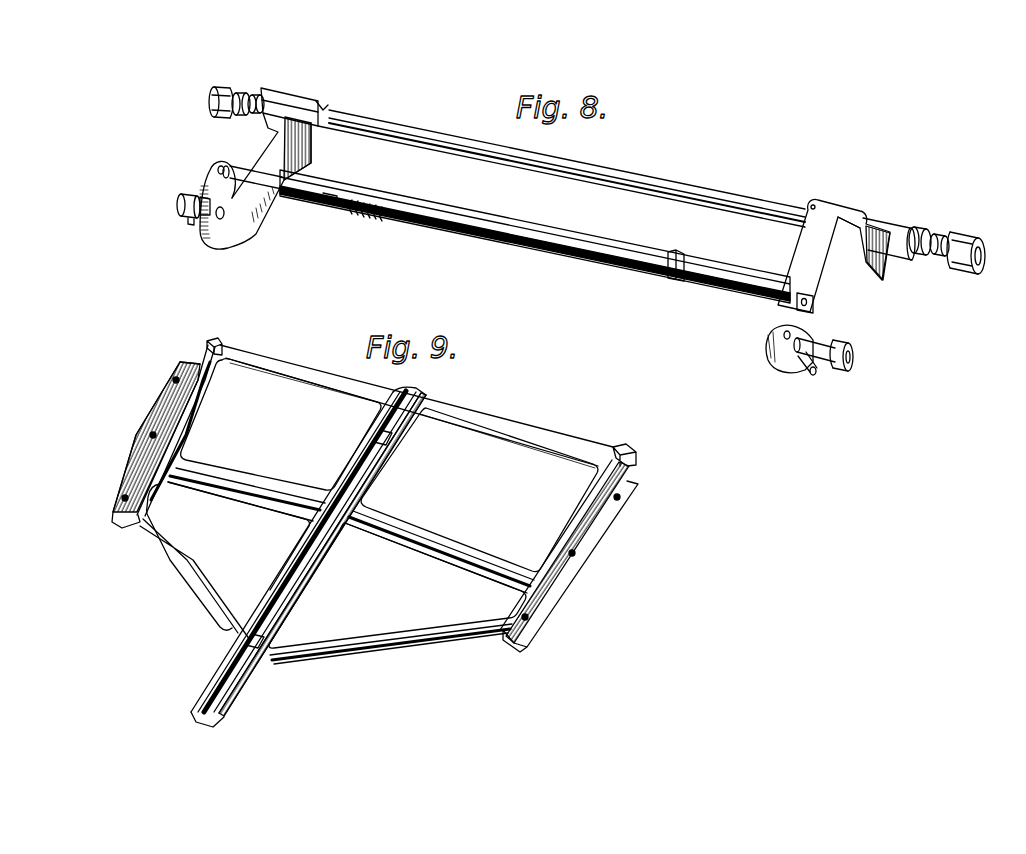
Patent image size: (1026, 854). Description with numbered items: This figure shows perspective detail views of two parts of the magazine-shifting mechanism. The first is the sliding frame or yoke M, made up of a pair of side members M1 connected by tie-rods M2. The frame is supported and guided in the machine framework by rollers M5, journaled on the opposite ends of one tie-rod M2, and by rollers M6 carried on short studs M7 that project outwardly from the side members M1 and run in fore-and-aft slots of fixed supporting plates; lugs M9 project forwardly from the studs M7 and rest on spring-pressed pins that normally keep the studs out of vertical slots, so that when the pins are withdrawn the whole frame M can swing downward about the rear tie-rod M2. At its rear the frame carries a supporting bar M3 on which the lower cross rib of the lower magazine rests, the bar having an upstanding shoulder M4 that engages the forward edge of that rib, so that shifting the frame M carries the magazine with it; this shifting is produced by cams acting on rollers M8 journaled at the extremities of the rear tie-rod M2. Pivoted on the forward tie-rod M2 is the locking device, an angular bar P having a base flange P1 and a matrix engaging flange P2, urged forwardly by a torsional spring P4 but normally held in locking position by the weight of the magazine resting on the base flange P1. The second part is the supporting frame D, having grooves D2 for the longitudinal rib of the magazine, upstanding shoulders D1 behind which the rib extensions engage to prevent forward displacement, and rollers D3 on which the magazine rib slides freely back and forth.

In FIG. 8, the sliding frame M is at (634, 163).
In FIG. 8, the side member M1 is at (305, 148).
In FIG. 8, the tie-rod M2 is at (747, 286).
In FIG. 8, the supporting bar M3 is at (329, 108).
In FIG. 8, the upstanding shoulder M4 is at (292, 97).
In FIG. 8, the roller M5 is at (256, 96).
In FIG. 8, the roller M6 is at (876, 341).
In FIG. 8, the stud M7 is at (201, 203).
In FIG. 8, the roller M8 is at (218, 89).
In FIG. 8, the lug M9 is at (808, 371).
In FIG. 8, the angular bar P is at (605, 256).
In FIG. 8, the base flange P1 is at (693, 266).
In FIG. 8, the matrix engaging flange P2 is at (678, 255).
In FIG. 8, the torsional spring P4 is at (378, 222).
In FIG. 9, the supporting frame D is at (550, 581).
In FIG. 9, the upstanding shoulder D1 is at (222, 342).
In FIG. 9, the groove D2 is at (363, 476).
In FIG. 9, the roller D3 is at (390, 434).